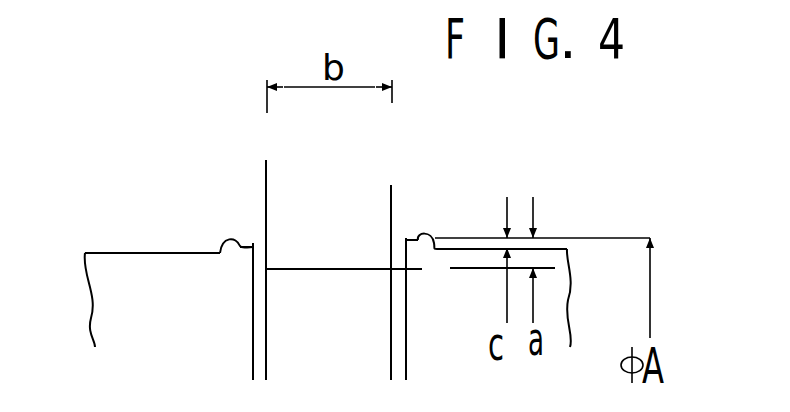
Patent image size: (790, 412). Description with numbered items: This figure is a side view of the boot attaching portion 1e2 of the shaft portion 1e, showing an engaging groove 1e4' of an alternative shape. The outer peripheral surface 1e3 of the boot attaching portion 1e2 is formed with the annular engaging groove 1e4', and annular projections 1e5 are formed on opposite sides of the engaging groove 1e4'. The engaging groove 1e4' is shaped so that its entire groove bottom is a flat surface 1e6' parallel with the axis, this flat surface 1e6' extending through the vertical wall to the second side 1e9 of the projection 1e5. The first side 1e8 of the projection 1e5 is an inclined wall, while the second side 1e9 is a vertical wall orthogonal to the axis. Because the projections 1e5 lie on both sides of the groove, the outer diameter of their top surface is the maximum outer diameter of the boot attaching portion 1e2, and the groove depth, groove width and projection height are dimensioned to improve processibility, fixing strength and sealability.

The shaft portion 1e is at (142, 265).
The boot attaching portion 1e2 is at (240, 150).
The outer peripheral surface 1e3 is at (468, 250).
The engaging groove 1e4' is at (361, 266).
The annular projection 1e5 is at (258, 242).
The flat surface 1e6' is at (344, 321).
The first side 1e8 is at (220, 253).
The second side 1e9 is at (270, 243).